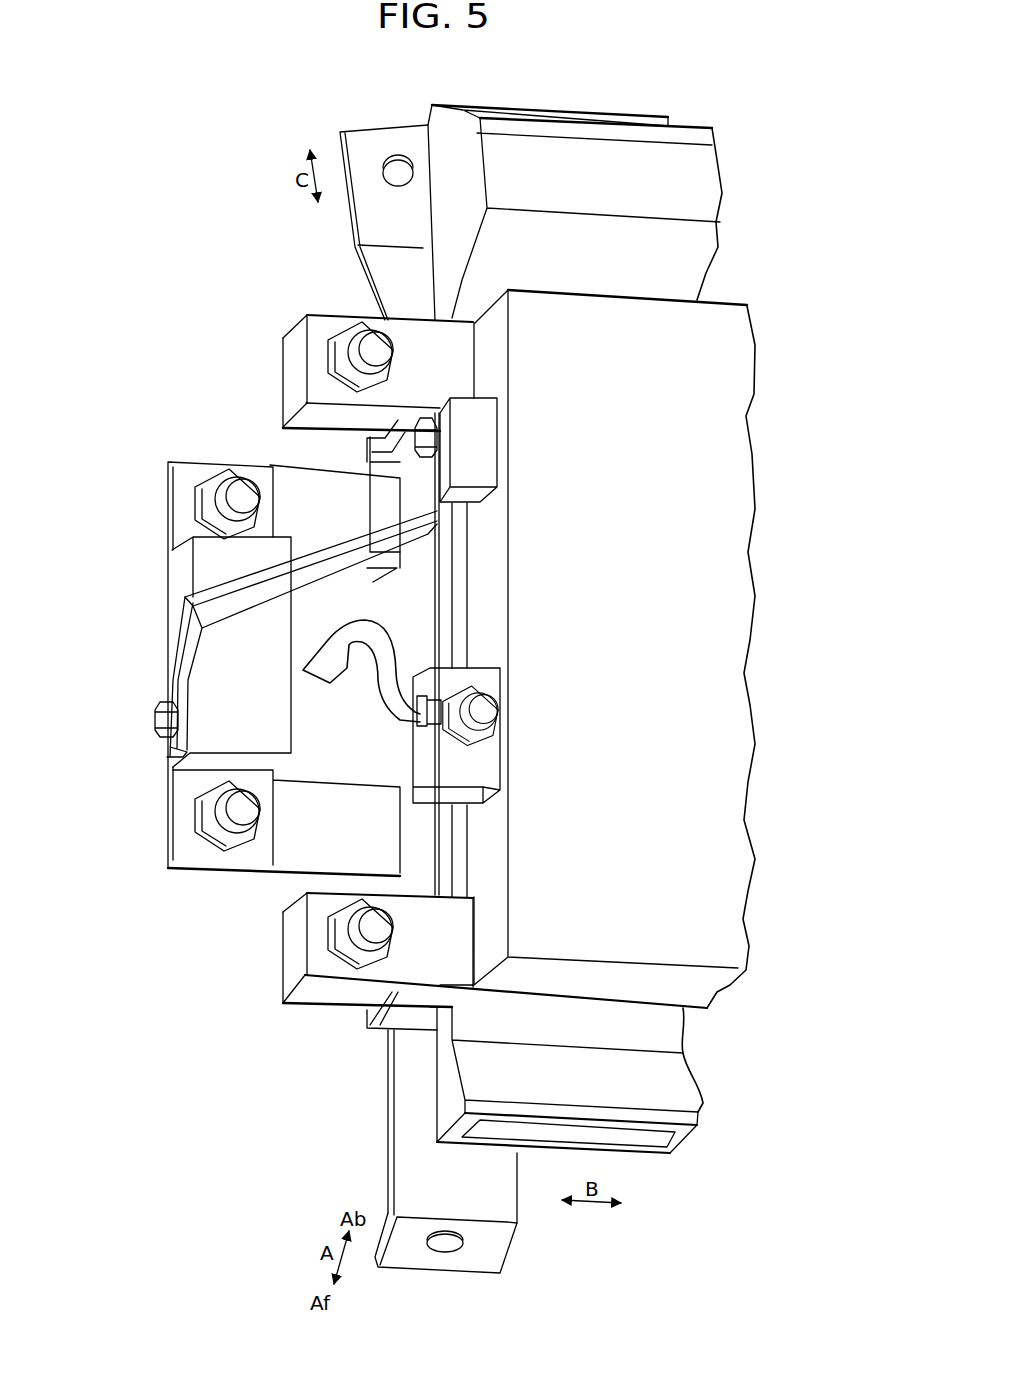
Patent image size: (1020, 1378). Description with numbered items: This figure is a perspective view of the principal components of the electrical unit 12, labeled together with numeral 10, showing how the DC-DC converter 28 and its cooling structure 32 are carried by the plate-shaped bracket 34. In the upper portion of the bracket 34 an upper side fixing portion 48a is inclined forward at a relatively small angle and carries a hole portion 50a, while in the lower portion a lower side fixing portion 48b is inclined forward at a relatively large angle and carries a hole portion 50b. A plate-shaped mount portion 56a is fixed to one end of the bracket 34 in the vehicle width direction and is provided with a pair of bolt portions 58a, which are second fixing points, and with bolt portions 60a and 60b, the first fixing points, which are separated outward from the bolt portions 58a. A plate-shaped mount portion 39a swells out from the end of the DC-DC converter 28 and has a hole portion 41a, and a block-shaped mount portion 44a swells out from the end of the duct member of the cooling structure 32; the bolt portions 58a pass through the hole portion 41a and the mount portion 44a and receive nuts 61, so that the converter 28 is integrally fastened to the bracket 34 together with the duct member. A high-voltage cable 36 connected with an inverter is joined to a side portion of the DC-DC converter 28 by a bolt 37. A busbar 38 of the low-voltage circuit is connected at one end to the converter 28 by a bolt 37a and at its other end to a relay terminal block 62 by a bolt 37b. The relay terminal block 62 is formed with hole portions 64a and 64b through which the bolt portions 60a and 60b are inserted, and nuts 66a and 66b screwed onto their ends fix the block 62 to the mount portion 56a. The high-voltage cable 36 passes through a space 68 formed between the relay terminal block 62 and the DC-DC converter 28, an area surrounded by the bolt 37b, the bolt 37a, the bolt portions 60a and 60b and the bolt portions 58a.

The vehicle 10 is at (158, 227).
The electrical unit 12 is at (121, 227).
The DC-DC converter 28 is at (732, 302).
The cooling structure 32 is at (722, 203).
The bracket 34 is at (405, 125).
The high-voltage cable 36 is at (330, 648).
The bolt 37 is at (480, 705).
The bolt 37a is at (430, 446).
The bolt 37b is at (155, 717).
The busbar 38 is at (185, 627).
The mount portion 39a is at (318, 330).
The hole portion 41a is at (343, 345).
The mount portion 44a is at (293, 393).
The upper side fixing portion 48a is at (363, 138).
The lower side fixing portion 48b is at (412, 1262).
The hole portion 50a is at (390, 175).
The hole portion 50b is at (448, 1250).
The mount portion 56a is at (340, 1035).
The bolt portion 58a is at (357, 352).
The bolt portion 60a is at (240, 480).
The bolt portion 60b is at (223, 827).
The nut 61 is at (333, 338).
The relay terminal block 62 is at (172, 585).
The hole portion 64a is at (217, 502).
The hole portion 64b is at (213, 812).
The nut 66a is at (198, 492).
The nut 66b is at (200, 820).
The space 68 is at (320, 705).